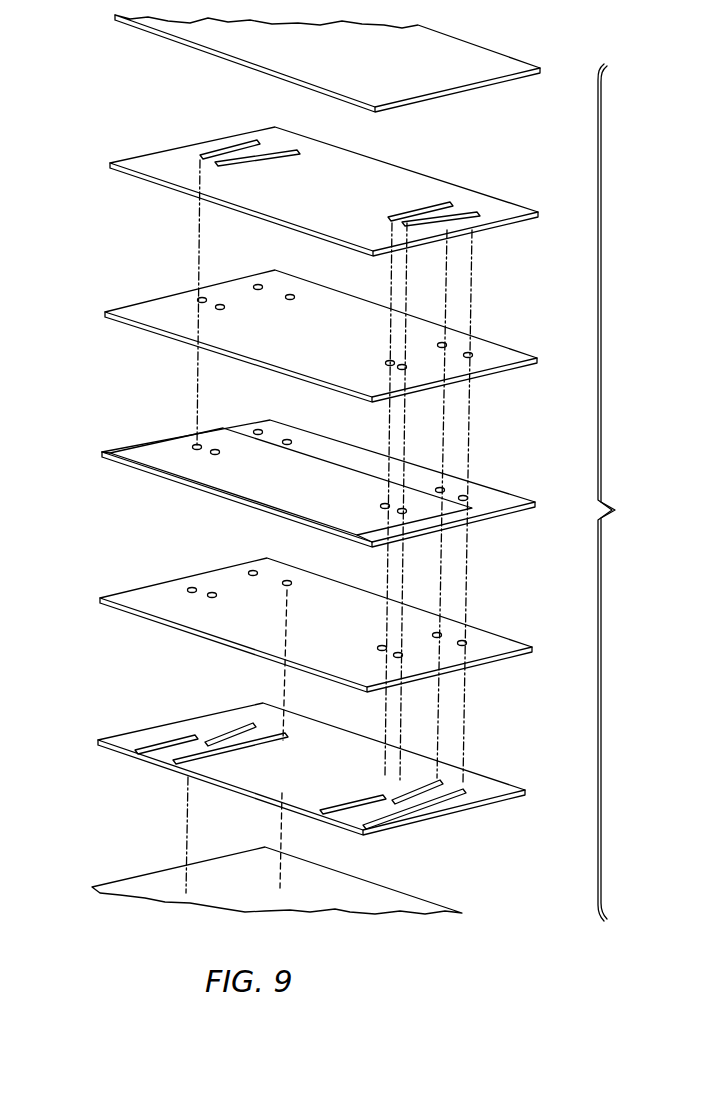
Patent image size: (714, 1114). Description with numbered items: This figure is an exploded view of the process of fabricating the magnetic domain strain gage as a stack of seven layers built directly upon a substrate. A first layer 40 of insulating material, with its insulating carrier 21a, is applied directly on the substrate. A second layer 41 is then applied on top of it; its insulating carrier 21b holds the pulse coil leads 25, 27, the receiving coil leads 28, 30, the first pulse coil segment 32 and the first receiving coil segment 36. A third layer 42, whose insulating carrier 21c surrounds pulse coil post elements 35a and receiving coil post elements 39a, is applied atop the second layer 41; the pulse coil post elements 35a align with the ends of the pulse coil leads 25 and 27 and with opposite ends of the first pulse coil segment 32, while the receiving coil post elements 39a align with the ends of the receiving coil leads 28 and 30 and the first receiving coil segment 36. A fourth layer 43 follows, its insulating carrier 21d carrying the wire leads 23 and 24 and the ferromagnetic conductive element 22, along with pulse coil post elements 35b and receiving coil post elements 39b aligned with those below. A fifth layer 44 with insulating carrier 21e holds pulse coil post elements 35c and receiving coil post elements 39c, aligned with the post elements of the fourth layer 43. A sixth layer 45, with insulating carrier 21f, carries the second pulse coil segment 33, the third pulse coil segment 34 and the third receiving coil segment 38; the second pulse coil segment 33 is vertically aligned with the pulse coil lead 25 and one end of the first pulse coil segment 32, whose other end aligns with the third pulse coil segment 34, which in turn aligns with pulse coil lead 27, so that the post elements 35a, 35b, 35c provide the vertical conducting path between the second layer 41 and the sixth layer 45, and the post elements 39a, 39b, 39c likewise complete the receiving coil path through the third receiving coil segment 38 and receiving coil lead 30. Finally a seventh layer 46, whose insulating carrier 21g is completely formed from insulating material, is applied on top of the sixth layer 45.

The insulating carrier 21a is at (308, 876).
The insulating carrier 21b is at (335, 737).
The insulating carrier 21c is at (338, 597).
The insulating carrier 21d is at (308, 431).
The insulating carrier 21e is at (347, 301).
The insulating carrier 21f is at (346, 155).
The insulating carrier 21g is at (473, 53).
The conductive element 22 is at (328, 467).
The wire lead 23 is at (140, 455).
The wire lead 24 is at (363, 532).
The pulse coil lead 25 is at (155, 742).
The pulse coil lead 27 is at (205, 757).
The receiving coil lead 28 is at (345, 805).
The receiving coil lead 30 is at (383, 818).
The first pulse coil segment 32 is at (432, 204).
The second pulse coil segment 33 is at (228, 147).
The third pulse coil segment 34 is at (258, 160).
The pulse coil post elements 35a is at (256, 573).
The pulse coil post elements 35b is at (287, 441).
The pulse coil post elements 35c is at (263, 287).
The first receiving coil segment 36 is at (433, 778).
The third receiving coil segment 38 is at (470, 206).
The receiving coil post elements 39a is at (437, 636).
The receiving coil post elements 39b is at (442, 490).
The receiving coil post elements 39c is at (468, 353).
The first layer 40 is at (277, 877).
The second layer 41 is at (311, 762).
The third layer 42 is at (316, 614).
The fourth layer 43 is at (318, 467).
The fifth layer 44 is at (313, 322).
The sixth layer 45 is at (324, 181).
The seventh layer 46 is at (327, 63).